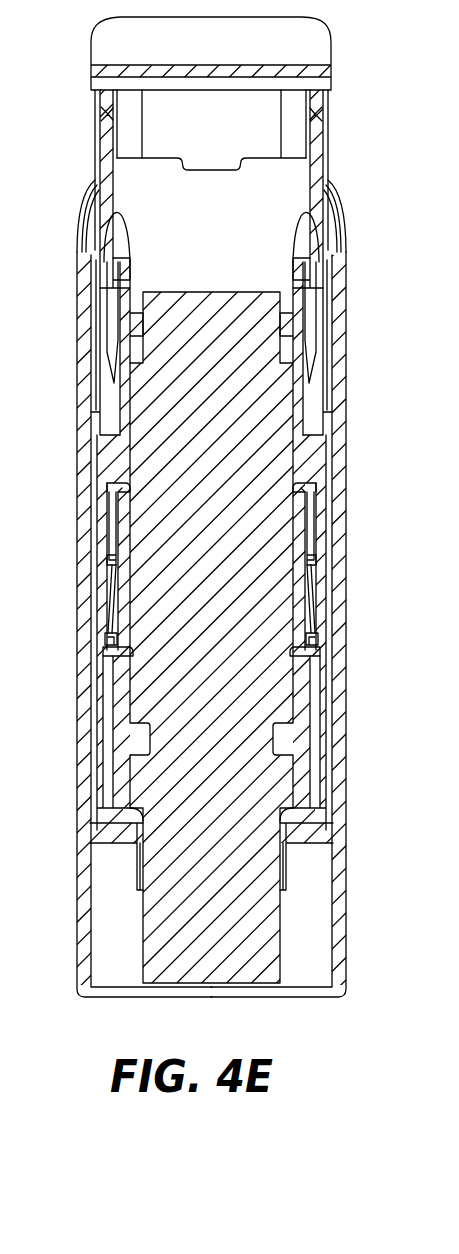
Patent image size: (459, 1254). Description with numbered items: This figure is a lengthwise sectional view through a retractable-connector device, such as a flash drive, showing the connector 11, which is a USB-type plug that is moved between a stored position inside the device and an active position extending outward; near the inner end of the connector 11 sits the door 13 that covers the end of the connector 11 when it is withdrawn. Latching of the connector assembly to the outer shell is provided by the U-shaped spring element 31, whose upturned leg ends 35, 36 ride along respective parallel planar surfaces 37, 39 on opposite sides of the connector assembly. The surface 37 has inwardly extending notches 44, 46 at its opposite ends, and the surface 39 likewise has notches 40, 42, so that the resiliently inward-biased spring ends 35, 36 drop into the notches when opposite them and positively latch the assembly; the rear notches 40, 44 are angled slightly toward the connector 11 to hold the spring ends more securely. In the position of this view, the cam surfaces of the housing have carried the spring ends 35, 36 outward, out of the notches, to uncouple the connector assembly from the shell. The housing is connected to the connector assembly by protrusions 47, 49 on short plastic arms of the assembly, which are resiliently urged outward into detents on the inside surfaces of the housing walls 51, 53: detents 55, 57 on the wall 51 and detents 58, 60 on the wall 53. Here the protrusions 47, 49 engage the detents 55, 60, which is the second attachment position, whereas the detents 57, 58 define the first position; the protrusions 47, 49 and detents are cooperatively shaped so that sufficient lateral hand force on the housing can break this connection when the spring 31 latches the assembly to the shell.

The connector 11 is at (273, 905).
The door 13 is at (288, 860).
The spring element 31 is at (113, 617).
The end of spring leg 35 is at (113, 642).
The end of spring leg 36 is at (310, 643).
The planar surface 37 is at (116, 528).
The planar surface 39 is at (307, 528).
The notch 40 is at (296, 483).
The notch 42 is at (298, 650).
The notch 44 is at (128, 488).
The notch 46 is at (125, 650).
The protrusion 47 is at (117, 233).
The protrusion 49 is at (303, 235).
The wall 51 is at (107, 150).
The wall 53 is at (322, 172).
The detent 55 is at (117, 268).
The detent 57 is at (103, 110).
The detent 58 is at (318, 110).
The detent 60 is at (313, 265).